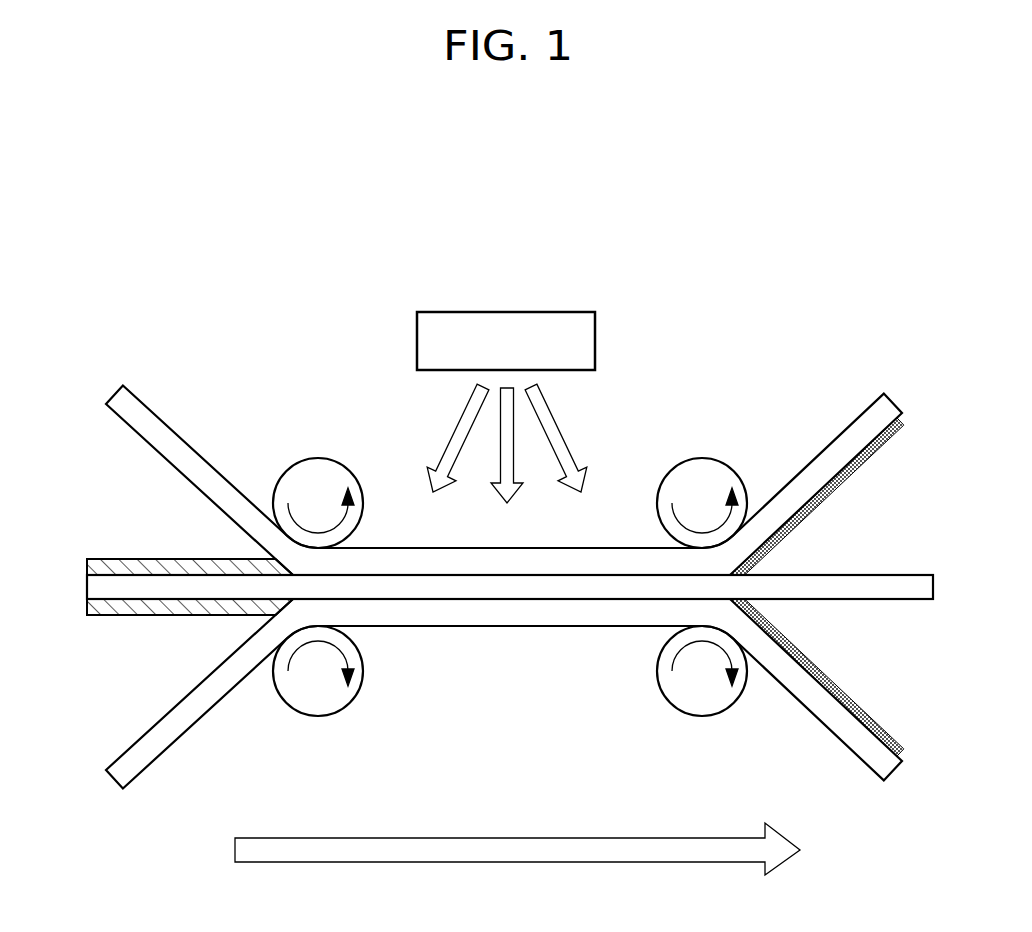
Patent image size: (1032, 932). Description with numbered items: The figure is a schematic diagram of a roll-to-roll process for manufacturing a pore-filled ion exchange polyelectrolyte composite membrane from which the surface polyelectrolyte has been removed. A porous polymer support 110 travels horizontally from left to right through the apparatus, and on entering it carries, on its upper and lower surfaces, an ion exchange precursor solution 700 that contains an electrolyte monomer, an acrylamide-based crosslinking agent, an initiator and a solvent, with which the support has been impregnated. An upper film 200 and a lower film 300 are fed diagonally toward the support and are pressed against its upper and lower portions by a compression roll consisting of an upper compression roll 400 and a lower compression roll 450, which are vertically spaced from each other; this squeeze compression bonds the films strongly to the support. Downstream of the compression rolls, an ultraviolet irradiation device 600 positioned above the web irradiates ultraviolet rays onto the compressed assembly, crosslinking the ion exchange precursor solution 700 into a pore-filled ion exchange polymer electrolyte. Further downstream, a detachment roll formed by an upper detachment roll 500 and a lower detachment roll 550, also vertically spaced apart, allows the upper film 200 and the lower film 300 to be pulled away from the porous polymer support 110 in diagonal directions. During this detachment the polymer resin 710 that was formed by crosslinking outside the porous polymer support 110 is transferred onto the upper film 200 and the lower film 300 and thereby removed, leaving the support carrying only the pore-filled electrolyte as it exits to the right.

The porous polymer support 110 is at (93, 587).
The upper film 200 is at (170, 437).
The lower film 300 is at (169, 736).
The upper compression roll 400 is at (317, 464).
The lower compression roll 450 is at (317, 708).
The upper detachment roll 500 is at (700, 463).
The lower detachment roll 550 is at (700, 708).
The ultraviolet irradiation device 600 is at (506, 407).
The ion exchange precursor solution 700 is at (121, 558).
The polymer resin 710 is at (861, 455).